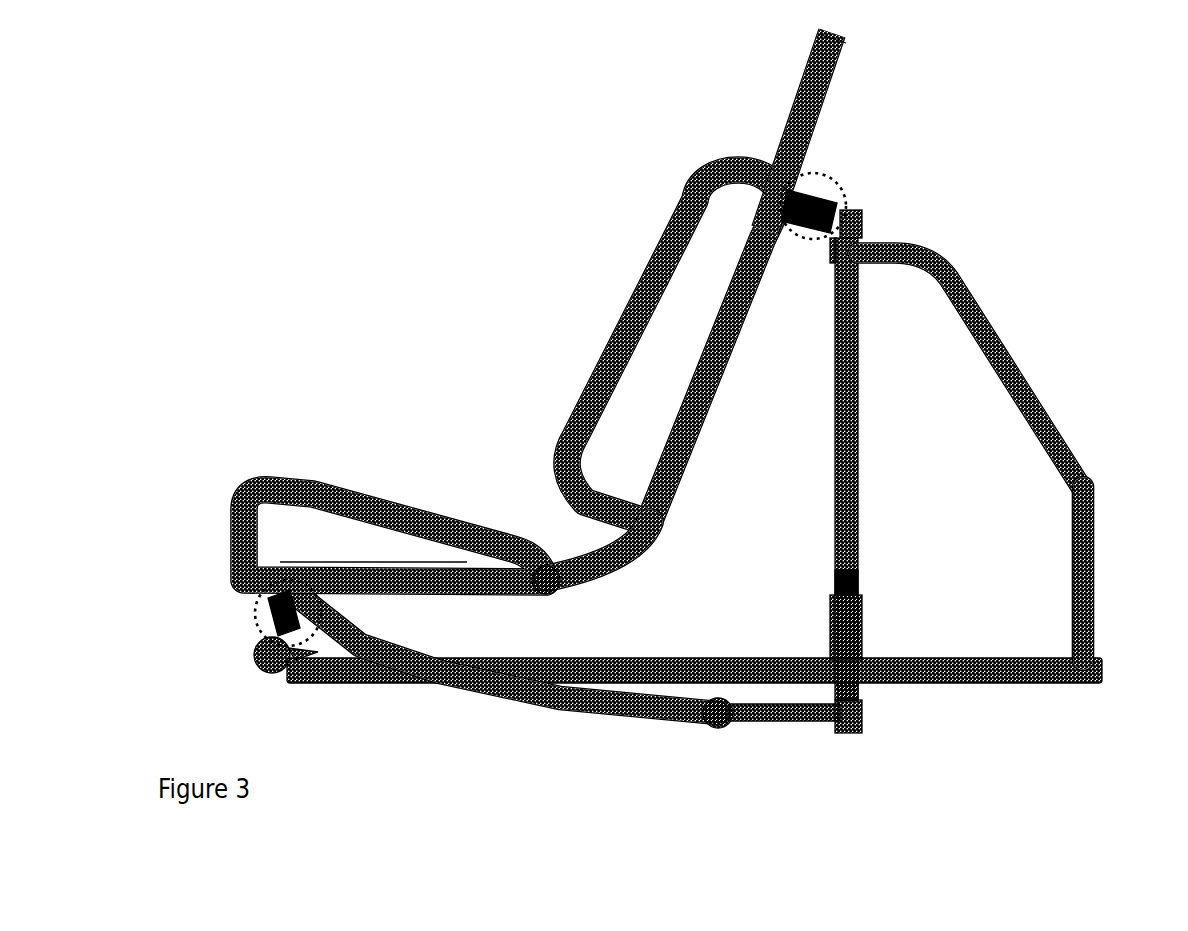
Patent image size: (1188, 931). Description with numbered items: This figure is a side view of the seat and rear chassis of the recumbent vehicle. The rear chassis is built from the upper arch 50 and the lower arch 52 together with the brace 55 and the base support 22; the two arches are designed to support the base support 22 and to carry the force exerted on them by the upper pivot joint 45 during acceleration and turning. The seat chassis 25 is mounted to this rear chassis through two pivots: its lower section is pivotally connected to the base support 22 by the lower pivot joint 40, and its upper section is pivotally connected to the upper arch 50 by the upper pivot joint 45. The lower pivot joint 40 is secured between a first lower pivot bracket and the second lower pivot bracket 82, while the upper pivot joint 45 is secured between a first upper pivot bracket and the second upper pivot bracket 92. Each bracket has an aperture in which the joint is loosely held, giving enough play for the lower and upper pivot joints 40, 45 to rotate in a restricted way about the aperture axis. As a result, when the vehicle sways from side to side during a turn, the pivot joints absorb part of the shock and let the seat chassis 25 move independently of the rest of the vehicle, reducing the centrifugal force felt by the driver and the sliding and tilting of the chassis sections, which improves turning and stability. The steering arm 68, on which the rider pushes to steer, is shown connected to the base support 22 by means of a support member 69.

The base support 22 is at (1043, 680).
The seat chassis 25 is at (821, 67).
The lower pivot joint 40 is at (292, 582).
The upper pivot joint 45 is at (841, 183).
The upper arch 50 is at (846, 440).
The lower arch 52 is at (1085, 540).
The brace 55 is at (1020, 380).
The steering arm 68 is at (597, 697).
The support member 69 is at (847, 722).
The second lower pivot bracket 82 is at (257, 650).
The second upper pivot bracket 92 is at (863, 225).